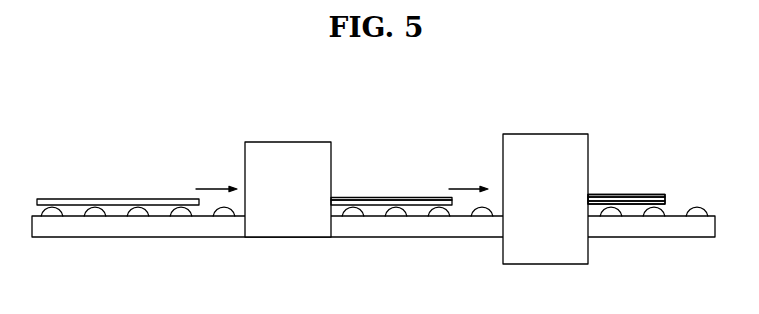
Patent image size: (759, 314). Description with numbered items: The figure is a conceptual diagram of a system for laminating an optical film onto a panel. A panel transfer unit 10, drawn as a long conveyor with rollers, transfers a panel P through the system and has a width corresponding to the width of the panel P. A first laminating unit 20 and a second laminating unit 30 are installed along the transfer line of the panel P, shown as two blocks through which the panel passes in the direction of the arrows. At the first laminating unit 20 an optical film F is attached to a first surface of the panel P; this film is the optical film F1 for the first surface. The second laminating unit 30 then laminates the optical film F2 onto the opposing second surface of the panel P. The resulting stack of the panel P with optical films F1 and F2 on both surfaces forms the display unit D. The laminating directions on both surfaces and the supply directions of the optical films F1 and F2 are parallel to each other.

The panel transfer unit 10 is at (103, 237).
The first laminating unit 20 is at (308, 142).
The second laminating unit 30 is at (566, 134).
The panel P is at (101, 199).
The optical film F is at (401, 198).
The optical film for first surface F1 is at (624, 194).
The optical film for second surface F2 is at (630, 204).
The display unit D is at (660, 178).